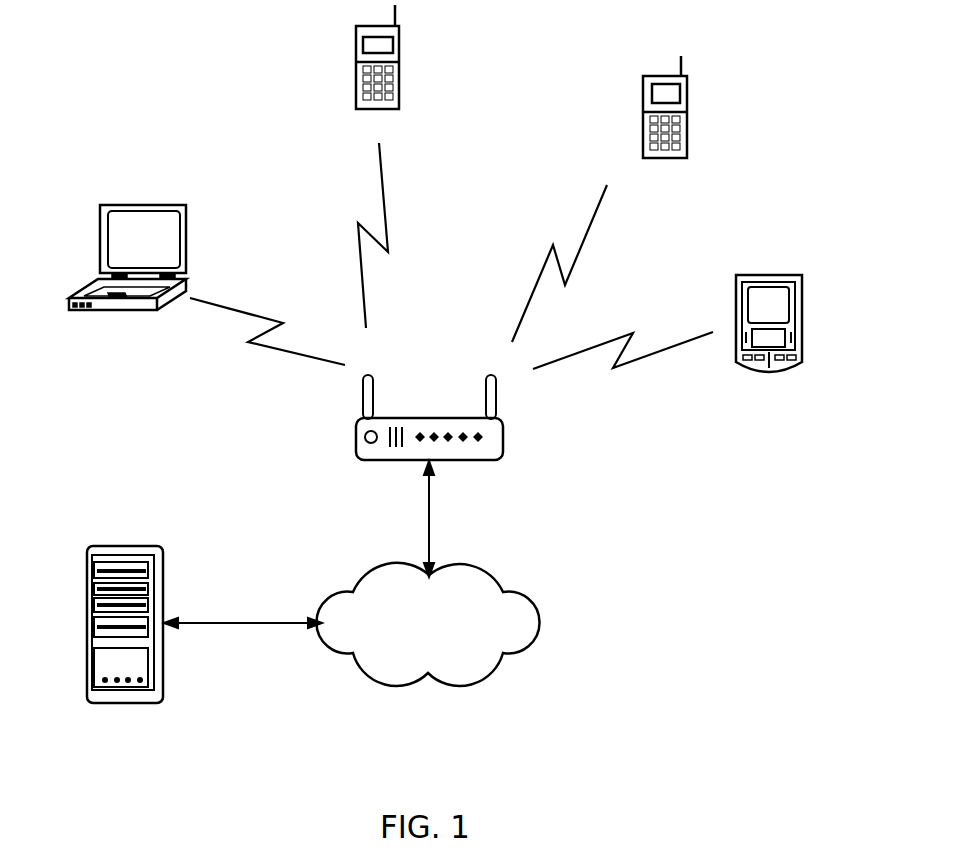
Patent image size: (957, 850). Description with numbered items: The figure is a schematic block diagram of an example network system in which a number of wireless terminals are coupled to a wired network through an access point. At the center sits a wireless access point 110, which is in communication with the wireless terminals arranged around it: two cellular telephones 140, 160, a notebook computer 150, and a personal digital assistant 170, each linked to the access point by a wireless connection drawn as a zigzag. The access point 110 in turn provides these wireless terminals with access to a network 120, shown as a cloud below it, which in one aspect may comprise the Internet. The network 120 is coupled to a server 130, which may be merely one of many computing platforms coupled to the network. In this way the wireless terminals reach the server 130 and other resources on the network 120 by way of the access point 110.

The wireless access point 110 is at (504, 428).
The network 120 is at (460, 683).
The server 130 is at (87, 617).
The cellular telephone 140 is at (688, 100).
The notebook computer 150 is at (100, 235).
The cellular telephone 160 is at (356, 58).
The personal digital assistant 170 is at (803, 315).